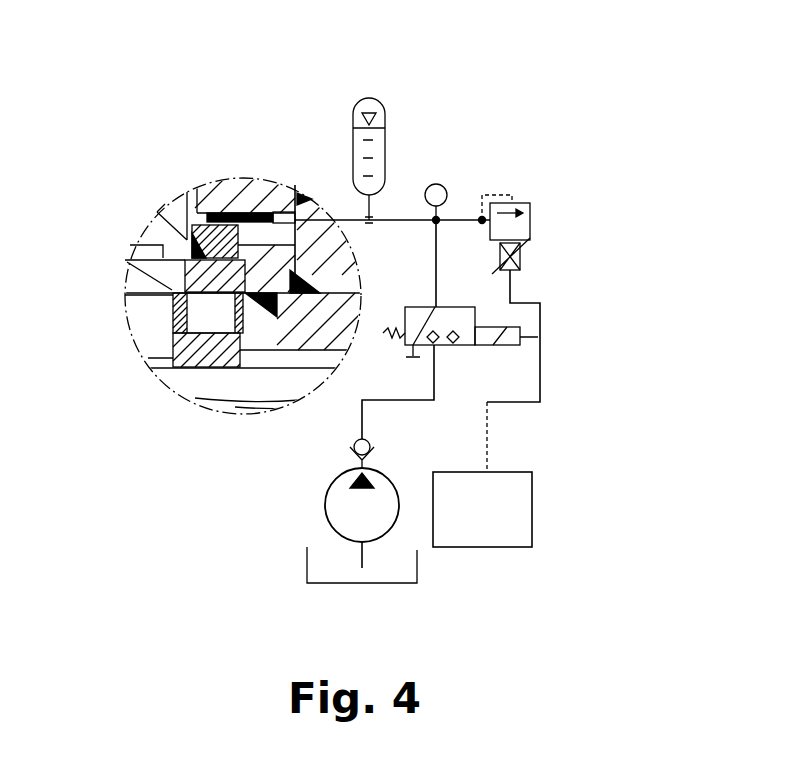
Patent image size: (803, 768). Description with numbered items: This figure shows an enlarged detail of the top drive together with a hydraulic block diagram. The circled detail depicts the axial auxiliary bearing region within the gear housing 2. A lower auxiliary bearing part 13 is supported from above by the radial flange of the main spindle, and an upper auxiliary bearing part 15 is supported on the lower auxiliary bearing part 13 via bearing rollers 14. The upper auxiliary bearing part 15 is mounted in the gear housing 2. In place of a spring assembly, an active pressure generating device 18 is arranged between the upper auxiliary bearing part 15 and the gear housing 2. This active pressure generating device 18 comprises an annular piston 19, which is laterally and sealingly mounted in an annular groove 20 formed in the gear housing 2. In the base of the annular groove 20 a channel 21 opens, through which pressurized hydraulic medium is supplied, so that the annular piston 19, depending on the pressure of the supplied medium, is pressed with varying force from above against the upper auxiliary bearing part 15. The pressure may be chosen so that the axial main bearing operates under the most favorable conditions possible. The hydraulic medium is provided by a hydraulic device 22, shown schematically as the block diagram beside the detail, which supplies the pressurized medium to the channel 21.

The gear housing 2 is at (248, 193).
The lower auxiliary bearing part 13 is at (197, 353).
The bearing rollers 14 is at (217, 313).
The upper auxiliary bearing part 15 is at (178, 268).
The active pressure generating device 18 is at (190, 170).
The annular piston 19 is at (187, 232).
The annular groove 20 is at (247, 245).
The channel 21 is at (285, 217).
The hydraulic device 22 is at (583, 125).